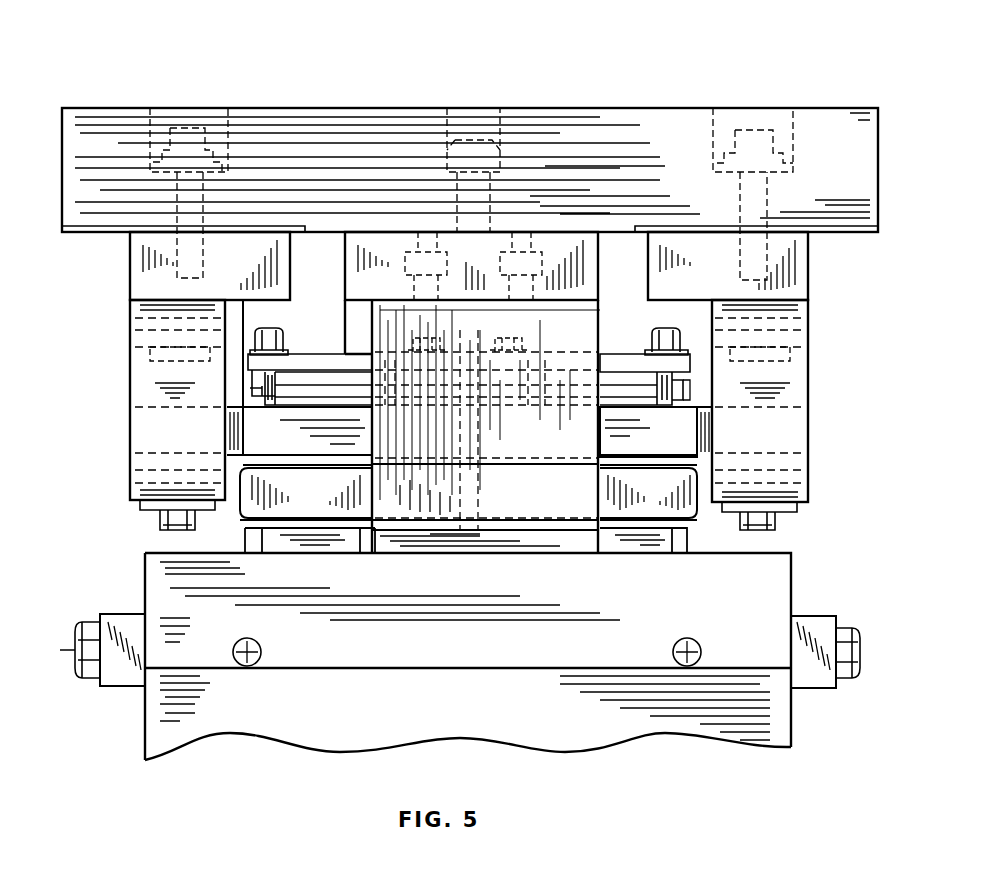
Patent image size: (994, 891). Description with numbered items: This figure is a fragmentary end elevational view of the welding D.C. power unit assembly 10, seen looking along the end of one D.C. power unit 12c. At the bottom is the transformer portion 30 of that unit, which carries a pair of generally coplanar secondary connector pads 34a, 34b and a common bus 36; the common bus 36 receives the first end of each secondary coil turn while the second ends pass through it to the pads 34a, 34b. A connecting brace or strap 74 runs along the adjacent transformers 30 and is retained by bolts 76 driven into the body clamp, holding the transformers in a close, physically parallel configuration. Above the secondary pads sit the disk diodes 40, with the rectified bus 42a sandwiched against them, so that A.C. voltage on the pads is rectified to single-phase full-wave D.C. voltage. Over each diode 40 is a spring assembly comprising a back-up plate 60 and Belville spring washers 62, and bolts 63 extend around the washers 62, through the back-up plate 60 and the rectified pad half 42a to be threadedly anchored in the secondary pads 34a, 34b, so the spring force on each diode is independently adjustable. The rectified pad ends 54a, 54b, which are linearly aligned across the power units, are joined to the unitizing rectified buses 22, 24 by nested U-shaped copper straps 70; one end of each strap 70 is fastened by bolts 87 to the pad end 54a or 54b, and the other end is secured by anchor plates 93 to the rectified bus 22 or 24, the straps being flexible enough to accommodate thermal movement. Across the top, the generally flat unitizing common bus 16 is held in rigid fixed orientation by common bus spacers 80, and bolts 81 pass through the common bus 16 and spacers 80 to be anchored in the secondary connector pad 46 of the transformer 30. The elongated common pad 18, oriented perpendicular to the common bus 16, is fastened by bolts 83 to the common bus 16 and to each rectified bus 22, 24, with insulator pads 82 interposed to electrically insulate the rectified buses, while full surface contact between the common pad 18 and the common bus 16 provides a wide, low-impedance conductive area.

The welding D.C. power unit assembly 10 is at (688, 44).
The D.C. power unit 12c is at (630, 750).
The unitizing common bus 16 is at (584, 292).
The common pad 18 is at (604, 171).
The unitizing rectified bus 22 is at (136, 283).
The unitizing rectified bus 24 is at (790, 290).
The transformer portion 30 is at (293, 540).
The secondary connector pad 34a is at (684, 505).
The secondary connector pad 34b is at (248, 500).
The common bus 36 is at (440, 556).
The disk diodes 40 is at (284, 474).
The rectified bus 42a is at (686, 446).
The secondary connector pad 46 is at (468, 506).
The first rectified pad end 54a is at (785, 418).
The second rectified pad end 54b is at (148, 438).
The back-up plate 60 is at (683, 390).
The Belville spring washers 62 is at (618, 388).
The bolts 63 is at (268, 330).
The copper straps 70 is at (122, 331).
The connecting brace or strap 74 is at (112, 618).
The bolts 76 is at (70, 650).
The common bus spacers 80 is at (573, 320).
The bolts 81 is at (420, 245).
The insulator pads 82 is at (103, 229).
The bolts 83 is at (200, 140).
The bolts 87 is at (150, 512).
The anchor plates 93 is at (140, 366).